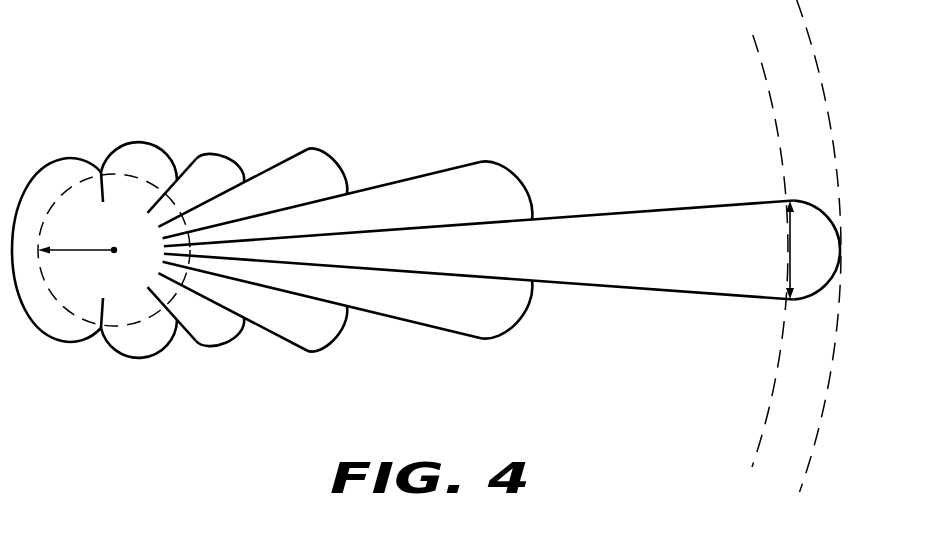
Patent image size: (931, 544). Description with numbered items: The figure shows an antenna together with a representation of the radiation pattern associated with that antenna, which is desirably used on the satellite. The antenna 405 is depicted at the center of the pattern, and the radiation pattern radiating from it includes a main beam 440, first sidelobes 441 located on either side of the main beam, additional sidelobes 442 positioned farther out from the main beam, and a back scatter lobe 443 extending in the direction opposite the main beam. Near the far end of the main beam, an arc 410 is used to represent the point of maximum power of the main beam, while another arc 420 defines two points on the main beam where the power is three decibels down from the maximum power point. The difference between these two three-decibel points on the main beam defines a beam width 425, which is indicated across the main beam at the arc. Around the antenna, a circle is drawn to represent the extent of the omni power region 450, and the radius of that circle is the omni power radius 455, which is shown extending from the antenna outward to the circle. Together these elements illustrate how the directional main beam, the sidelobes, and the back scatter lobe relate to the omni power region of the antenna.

The antenna 405 is at (116, 255).
The arc 410 is at (808, 465).
The arc 420 is at (762, 436).
The beam width 425 is at (789, 249).
The main beam 440 is at (502, 234).
The first sidelobes 441 is at (482, 162).
The additional sidelobes 442 is at (140, 142).
The back scatter lobe 443 is at (67, 158).
The omni power region 450 is at (65, 307).
The omni power radius 455 is at (78, 246).